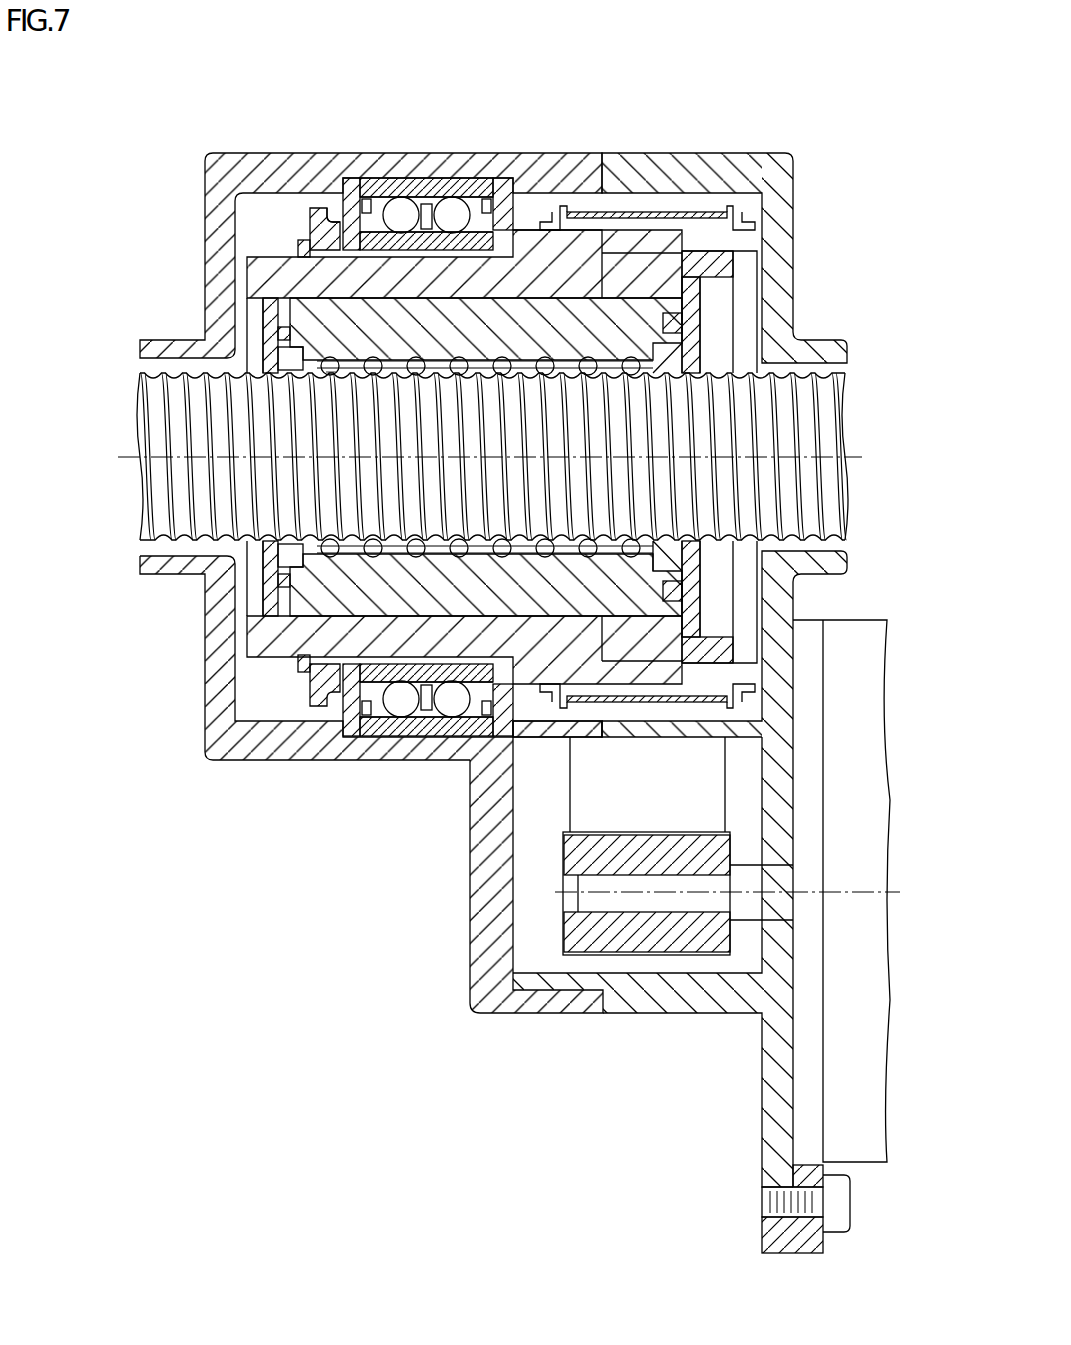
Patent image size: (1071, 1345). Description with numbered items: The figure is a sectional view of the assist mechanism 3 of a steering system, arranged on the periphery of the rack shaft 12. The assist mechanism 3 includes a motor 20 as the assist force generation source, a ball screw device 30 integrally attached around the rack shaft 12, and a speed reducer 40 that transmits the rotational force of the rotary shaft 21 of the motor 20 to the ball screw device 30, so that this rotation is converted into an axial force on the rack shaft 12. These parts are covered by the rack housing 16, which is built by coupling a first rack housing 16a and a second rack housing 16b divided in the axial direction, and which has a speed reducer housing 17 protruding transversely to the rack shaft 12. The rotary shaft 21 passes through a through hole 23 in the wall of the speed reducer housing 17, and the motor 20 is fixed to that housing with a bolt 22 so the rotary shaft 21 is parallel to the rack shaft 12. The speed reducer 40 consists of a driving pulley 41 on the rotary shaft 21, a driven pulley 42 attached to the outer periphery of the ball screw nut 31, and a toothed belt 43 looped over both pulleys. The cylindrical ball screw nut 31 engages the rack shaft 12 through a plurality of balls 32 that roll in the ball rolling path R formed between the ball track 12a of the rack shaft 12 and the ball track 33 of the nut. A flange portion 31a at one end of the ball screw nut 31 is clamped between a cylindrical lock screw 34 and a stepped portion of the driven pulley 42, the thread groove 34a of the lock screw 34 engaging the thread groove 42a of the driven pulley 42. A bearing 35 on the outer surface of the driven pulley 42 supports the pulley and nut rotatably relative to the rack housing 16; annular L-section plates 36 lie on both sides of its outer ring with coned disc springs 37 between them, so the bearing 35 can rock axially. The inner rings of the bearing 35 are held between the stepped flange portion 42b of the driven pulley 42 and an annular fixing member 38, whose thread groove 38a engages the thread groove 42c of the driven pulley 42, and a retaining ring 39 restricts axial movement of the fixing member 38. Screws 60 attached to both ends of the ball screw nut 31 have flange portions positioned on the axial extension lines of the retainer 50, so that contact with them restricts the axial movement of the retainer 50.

The assist mechanism 3 is at (433, 1012).
The rack shaft 12 is at (150, 380).
The ball track 12a is at (150, 353).
The rack housing 16 is at (595, 92).
The first rack housing 16a is at (575, 168).
The second rack housing 16b is at (702, 162).
The speed reducer housing 17 is at (488, 971).
The motor 20 is at (868, 1163).
The rotary shaft 21 is at (780, 907).
The bolt 22 is at (837, 1232).
The through hole 23 is at (778, 830).
The ball screw device 30 is at (293, 598).
The ball screw nut 31 is at (317, 607).
The flange portion 31a is at (617, 250).
The balls 32 is at (463, 366).
The ball track 33 is at (530, 361).
The lock screw 34 is at (722, 267).
The thread groove 34a is at (715, 250).
The bearing 35 is at (437, 182).
The plates 36 is at (340, 745).
The coned disc springs 37 is at (350, 715).
The fixing member 38 is at (318, 702).
The thread groove 38a is at (330, 250).
The retaining ring 39 is at (305, 672).
The speed reducer 40 is at (555, 850).
The driving pulley 41 is at (573, 923).
The driven pulley 42 is at (250, 263).
The thread groove 42a is at (715, 648).
The flange portion 42b is at (720, 700).
The thread groove 42c is at (310, 228).
The belt 43 is at (707, 763).
The retainer 50 is at (665, 550).
The screws 60 is at (270, 335).
The ball rolling path R is at (420, 392).